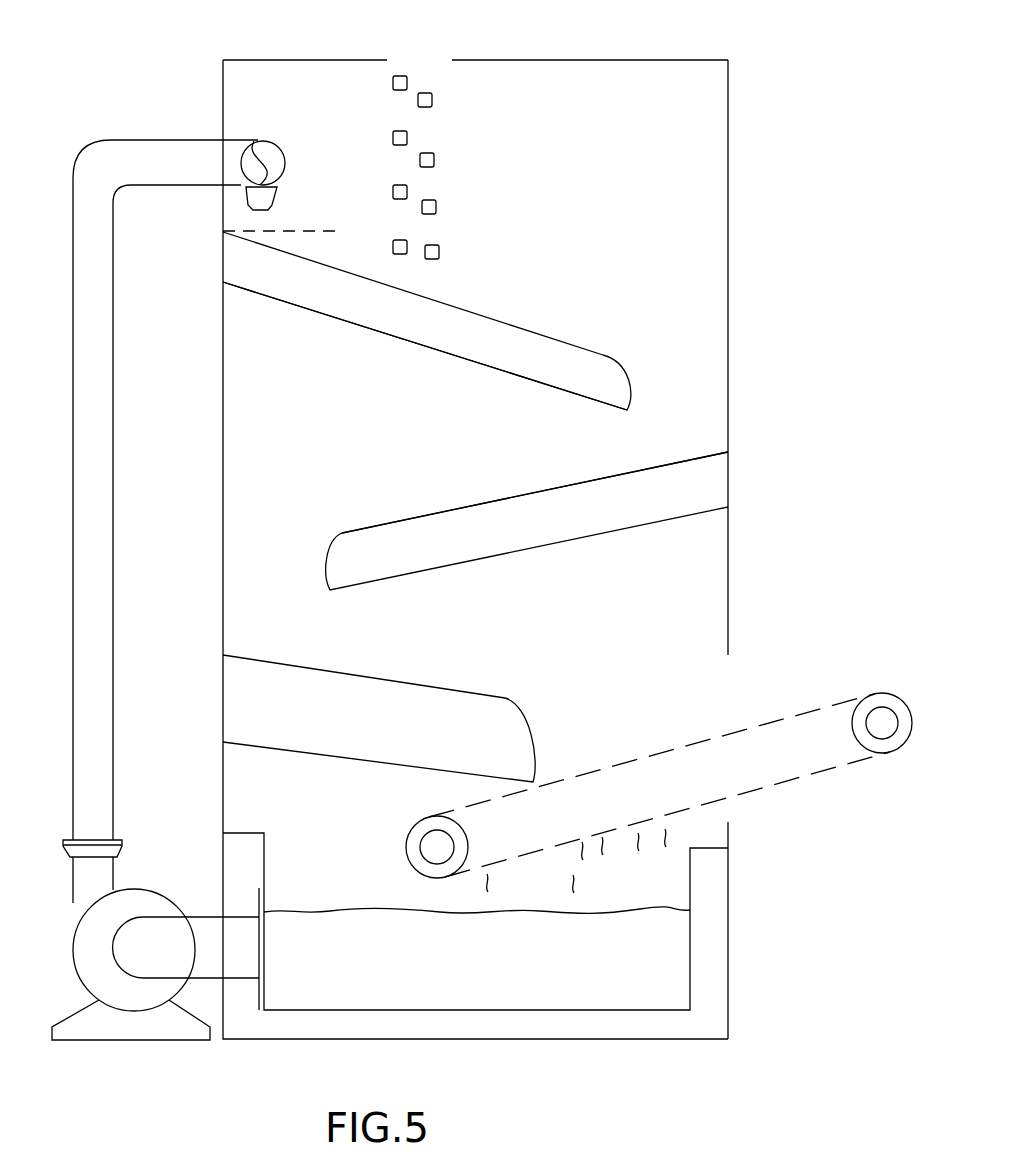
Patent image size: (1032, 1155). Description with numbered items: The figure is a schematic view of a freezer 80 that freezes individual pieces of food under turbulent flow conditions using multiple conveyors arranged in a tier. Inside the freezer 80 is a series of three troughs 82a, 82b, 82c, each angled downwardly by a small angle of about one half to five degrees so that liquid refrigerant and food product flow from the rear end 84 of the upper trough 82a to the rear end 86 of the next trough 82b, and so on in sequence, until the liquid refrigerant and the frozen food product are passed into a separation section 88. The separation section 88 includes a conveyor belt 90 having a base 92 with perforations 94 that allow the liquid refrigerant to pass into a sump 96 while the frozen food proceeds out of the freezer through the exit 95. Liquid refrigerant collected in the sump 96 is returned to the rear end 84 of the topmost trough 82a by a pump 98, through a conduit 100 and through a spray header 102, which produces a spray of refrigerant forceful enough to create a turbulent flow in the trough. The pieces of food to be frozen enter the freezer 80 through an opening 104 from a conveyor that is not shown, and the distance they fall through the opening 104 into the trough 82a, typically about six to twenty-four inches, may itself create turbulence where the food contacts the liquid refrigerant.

The freezer 80 is at (668, 48).
The upper trough 82a is at (394, 320).
The next trough 82b is at (568, 528).
The third trough 82c is at (381, 733).
The rear end of upper trough 84 is at (252, 292).
The rear end of next trough 86 is at (673, 460).
The separation section 88 is at (654, 739).
The conveyor belt 90 is at (659, 775).
The base 92 is at (750, 725).
The perforations 94 is at (529, 862).
The exit 95 is at (756, 659).
The sump 96 is at (487, 970).
The pump 98 is at (122, 1046).
The conduit 100 is at (103, 619).
The spray header 102 is at (290, 150).
The opening 104 is at (420, 57).